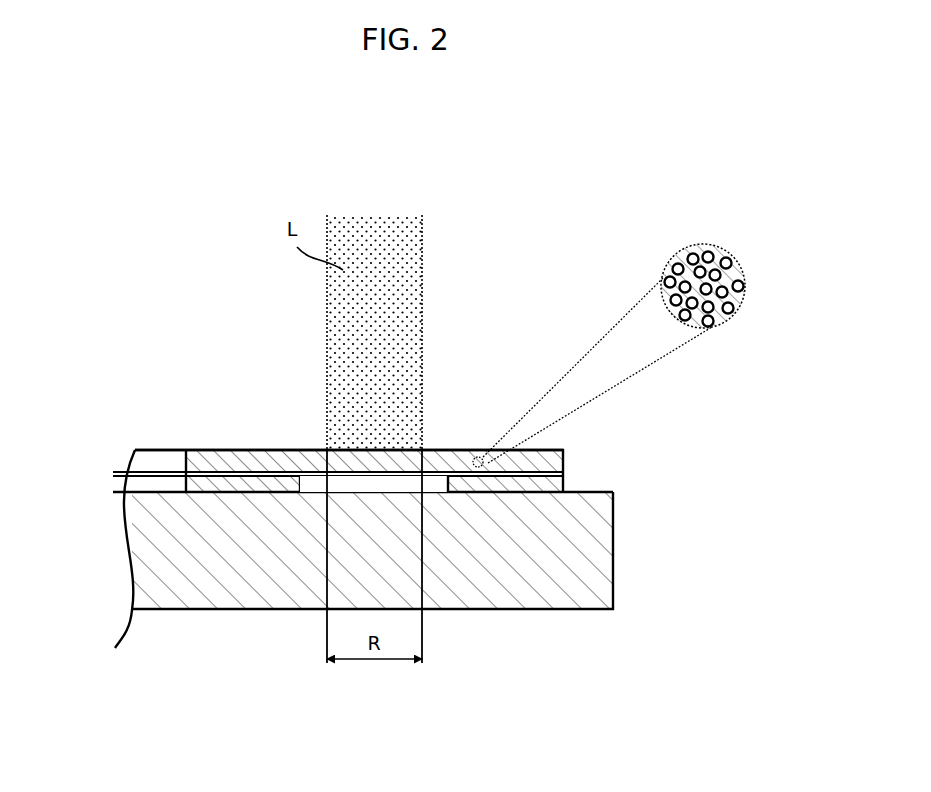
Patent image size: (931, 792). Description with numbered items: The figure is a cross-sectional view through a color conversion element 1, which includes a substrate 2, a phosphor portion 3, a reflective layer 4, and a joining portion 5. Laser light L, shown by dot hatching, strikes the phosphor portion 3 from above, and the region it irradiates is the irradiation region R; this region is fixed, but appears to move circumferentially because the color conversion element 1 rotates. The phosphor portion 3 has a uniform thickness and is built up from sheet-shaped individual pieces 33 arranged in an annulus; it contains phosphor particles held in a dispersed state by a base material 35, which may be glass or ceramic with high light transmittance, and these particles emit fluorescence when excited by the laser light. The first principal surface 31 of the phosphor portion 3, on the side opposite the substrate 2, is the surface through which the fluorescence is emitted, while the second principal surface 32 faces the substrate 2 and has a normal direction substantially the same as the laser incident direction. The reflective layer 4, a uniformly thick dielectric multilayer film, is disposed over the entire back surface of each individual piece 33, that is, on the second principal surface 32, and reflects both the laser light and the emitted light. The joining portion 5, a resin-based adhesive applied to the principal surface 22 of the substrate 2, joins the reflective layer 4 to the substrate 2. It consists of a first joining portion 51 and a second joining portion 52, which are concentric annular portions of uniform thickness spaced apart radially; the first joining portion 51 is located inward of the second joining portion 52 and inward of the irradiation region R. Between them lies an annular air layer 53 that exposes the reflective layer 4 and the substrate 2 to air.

The color conversion element 1 is at (94, 211).
The substrate 2 is at (636, 641).
The principal surface 22 is at (601, 491).
The phosphor portion 3 is at (349, 430).
The individual pieces 33 is at (209, 431).
The first principal surface 31 is at (195, 450).
The second principal surface 32 is at (195, 474).
The base material 35 is at (644, 335).
The reflective layer 4 is at (302, 483).
The joining portion 5 is at (422, 435).
The first joining portion 51 is at (243, 487).
The second joining portion 52 is at (462, 480).
The air layer 53 is at (318, 485).